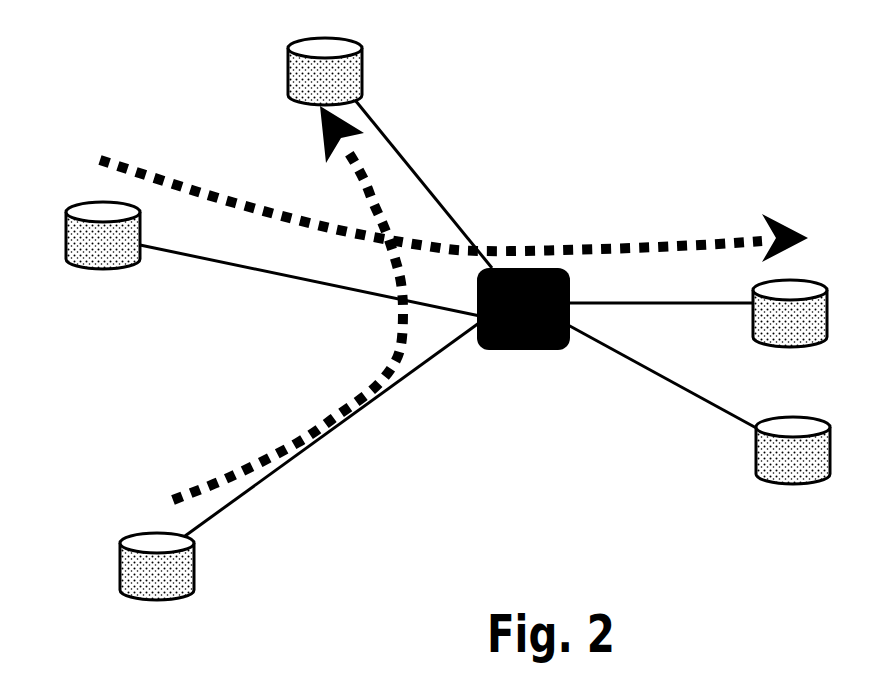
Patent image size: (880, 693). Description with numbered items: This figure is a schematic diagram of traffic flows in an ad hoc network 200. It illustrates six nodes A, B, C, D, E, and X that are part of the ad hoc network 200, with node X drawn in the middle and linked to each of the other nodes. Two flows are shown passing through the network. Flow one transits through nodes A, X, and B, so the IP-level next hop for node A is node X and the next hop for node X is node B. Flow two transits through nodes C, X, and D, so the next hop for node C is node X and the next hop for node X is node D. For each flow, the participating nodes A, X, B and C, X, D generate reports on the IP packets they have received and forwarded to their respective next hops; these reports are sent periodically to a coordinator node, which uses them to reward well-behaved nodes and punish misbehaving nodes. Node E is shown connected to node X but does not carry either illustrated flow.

The ad hoc network 200 is at (610, 41).
The node A is at (77, 239).
The node B is at (802, 273).
The node C is at (170, 606).
The node D is at (356, 76).
The node E is at (793, 490).
The node X is at (518, 347).